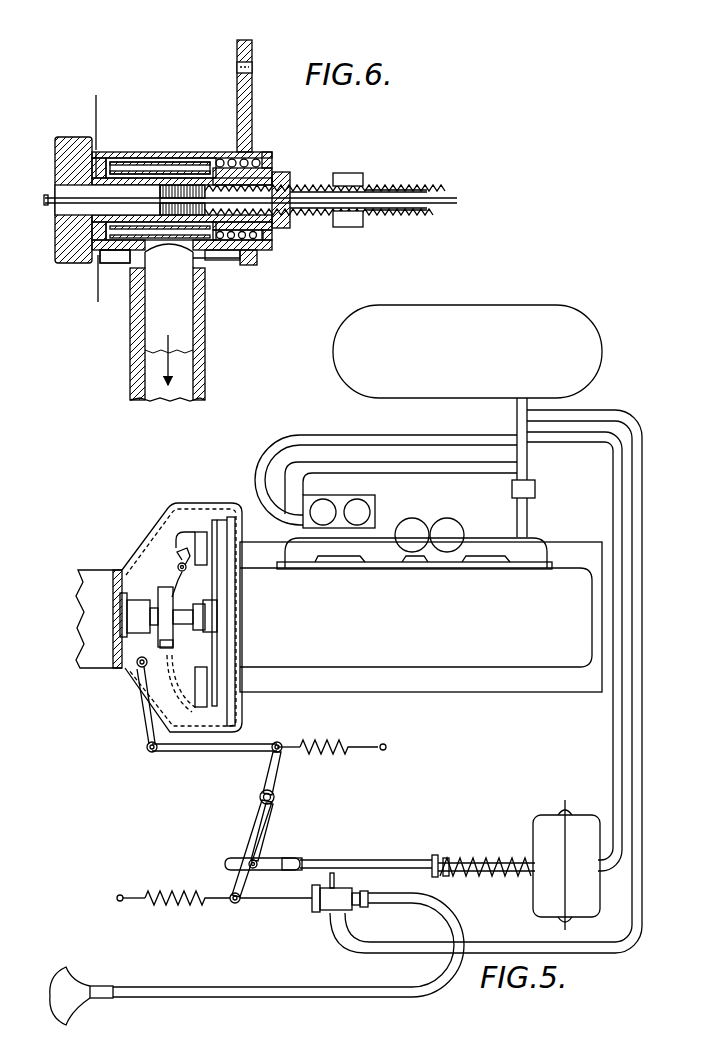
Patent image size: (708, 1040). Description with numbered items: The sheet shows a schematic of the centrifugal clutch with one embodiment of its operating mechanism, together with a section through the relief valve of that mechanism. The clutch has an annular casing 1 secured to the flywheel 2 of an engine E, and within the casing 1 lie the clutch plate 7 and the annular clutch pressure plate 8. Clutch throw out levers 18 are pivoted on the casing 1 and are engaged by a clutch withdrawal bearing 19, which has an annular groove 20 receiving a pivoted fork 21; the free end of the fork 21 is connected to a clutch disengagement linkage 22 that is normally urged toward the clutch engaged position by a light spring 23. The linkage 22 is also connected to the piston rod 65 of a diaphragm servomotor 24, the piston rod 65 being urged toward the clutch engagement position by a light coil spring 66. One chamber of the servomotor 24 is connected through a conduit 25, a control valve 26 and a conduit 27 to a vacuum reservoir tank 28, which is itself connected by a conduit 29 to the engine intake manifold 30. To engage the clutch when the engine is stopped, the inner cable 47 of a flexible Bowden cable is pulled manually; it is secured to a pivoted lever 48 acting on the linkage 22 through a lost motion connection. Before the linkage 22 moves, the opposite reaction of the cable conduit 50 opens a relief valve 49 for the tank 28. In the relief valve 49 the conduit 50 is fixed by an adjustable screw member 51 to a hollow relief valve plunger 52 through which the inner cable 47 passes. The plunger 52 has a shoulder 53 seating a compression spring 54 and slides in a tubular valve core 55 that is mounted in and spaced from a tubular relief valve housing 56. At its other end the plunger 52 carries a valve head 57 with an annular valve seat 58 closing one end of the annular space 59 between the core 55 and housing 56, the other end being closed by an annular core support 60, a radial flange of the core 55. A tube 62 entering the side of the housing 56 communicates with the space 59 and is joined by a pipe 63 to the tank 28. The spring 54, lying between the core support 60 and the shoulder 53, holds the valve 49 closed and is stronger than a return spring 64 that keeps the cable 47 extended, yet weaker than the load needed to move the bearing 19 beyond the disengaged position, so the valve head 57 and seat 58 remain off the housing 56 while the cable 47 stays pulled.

In FIG. 5, the annular casing 1 is at (199, 530).
In FIG. 5, the flywheel 2 is at (229, 698).
In FIG. 6, the clutch plate 7 is at (94, 108).
In FIG. 5, the clutch plate 7 is at (213, 707).
In FIG. 5, the clutch pressure plate 8 is at (193, 712).
In FIG. 5, the clutch throw out levers 18 is at (175, 553).
In FIG. 5, the clutch withdrawal bearing 19 is at (165, 592).
In FIG. 5, the annular groove 20 is at (142, 604).
In FIG. 5, the pivoted fork 21 is at (143, 697).
In FIG. 5, the clutch disengagement linkage 22 is at (270, 766).
In FIG. 5, the light spring 23 is at (343, 741).
In FIG. 5, the diaphragm servomotor 24 is at (557, 837).
In FIG. 5, the conduit 25 is at (347, 437).
In FIG. 5, the control valve 26 is at (374, 500).
In FIG. 5, the conduit 27 is at (442, 466).
In FIG. 5, the vacuum reservoir tank 28 is at (468, 326).
In FIG. 5, the conduit 29 is at (527, 510).
In FIG. 5, the engine intake manifold 30 is at (496, 547).
In FIG. 6, the inner cable 47 is at (434, 203).
In FIG. 5, the inner cable 47 is at (287, 900).
In FIG. 5, the pivoted lever 48 is at (243, 840).
In FIG. 6, the relief valve 49 is at (125, 262).
In FIG. 5, the relief valve 49 is at (336, 904).
In FIG. 6, the conduit 50 is at (396, 188).
In FIG. 5, the conduit 50 is at (223, 996).
In FIG. 6, the adjustable screw member 51 is at (310, 184).
In FIG. 6, the hollow relief valve plunger 52 is at (274, 170).
In FIG. 6, the shoulder 53 is at (268, 237).
In FIG. 6, the spring 54 is at (252, 167).
In FIG. 6, the tubular valve core 55 is at (150, 172).
In FIG. 6, the tubular relief valve housing 56 is at (190, 157).
In FIG. 6, the valve head 57 is at (56, 160).
In FIG. 6, the annular valve seat 58 is at (97, 153).
In FIG. 6, the annular space 59 is at (99, 166).
In FIG. 6, the annular core support 60 is at (209, 158).
In FIG. 6, the tube 62 is at (201, 258).
In FIG. 6, the pipe 63 is at (205, 363).
In FIG. 5, the pipe 63 is at (502, 945).
In FIG. 5, the return spring 64 is at (163, 902).
In FIG. 5, the piston rod 65 is at (480, 861).
In FIG. 5, the light coil spring 66 is at (450, 874).
In FIG. 5, the engine E is at (510, 645).